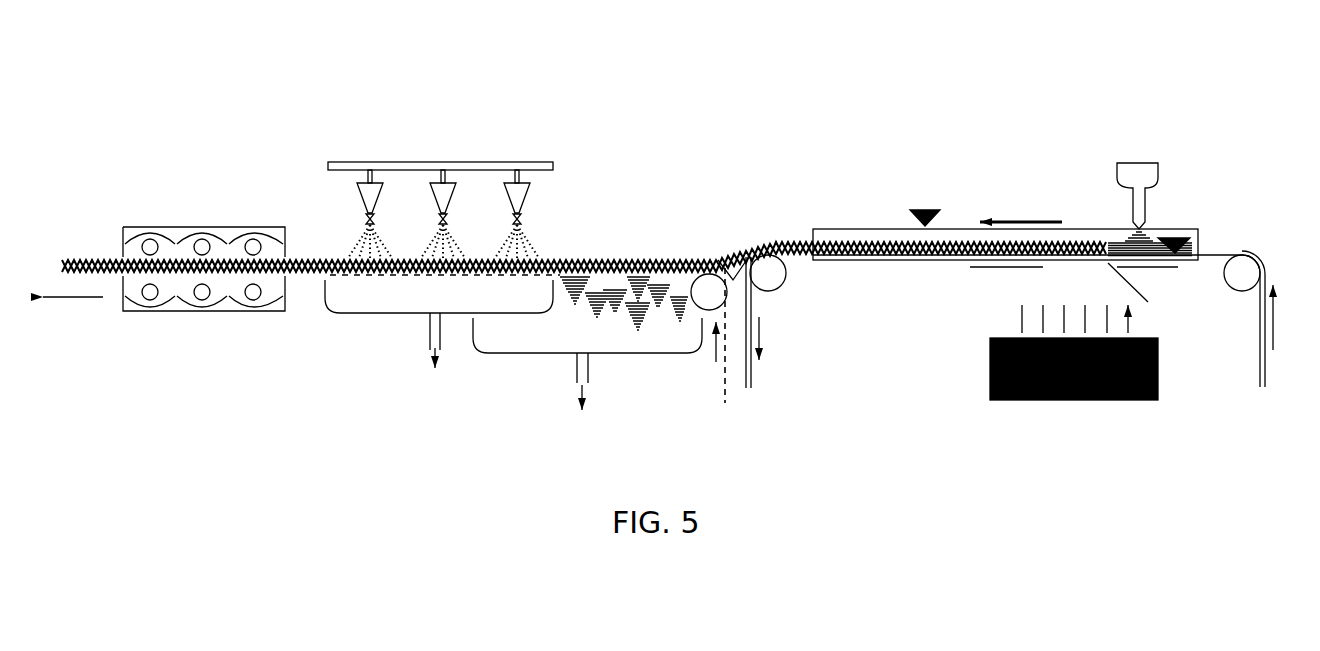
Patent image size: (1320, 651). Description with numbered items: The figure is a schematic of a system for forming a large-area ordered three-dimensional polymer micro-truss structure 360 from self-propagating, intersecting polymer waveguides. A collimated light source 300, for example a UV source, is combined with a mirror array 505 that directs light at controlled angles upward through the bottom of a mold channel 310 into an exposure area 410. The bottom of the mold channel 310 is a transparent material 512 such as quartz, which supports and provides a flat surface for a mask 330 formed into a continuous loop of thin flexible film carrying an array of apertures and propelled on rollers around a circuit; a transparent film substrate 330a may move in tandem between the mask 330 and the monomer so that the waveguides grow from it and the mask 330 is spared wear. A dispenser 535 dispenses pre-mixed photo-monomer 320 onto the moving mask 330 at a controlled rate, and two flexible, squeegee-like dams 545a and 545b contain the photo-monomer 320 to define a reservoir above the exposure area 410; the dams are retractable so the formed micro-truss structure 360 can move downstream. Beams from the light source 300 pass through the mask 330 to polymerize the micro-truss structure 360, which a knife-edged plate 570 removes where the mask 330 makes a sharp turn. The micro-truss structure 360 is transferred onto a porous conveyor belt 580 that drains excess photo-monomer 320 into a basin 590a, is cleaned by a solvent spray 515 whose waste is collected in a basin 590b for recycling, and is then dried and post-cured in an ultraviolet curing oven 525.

The collimated light source 300 is at (1005, 400).
The mold channel 310 is at (1172, 223).
The photo-monomer 320 is at (1118, 252).
The mask 330 is at (1250, 368).
The transparent film substrate 330a is at (1272, 370).
The micro-truss structure 360 is at (785, 237).
The exposure area 410 is at (1047, 268).
The mirror array 505 is at (1008, 278).
The transparent material 512 is at (893, 265).
The spray 515 is at (345, 240).
The ultraviolet curing oven 525 is at (160, 218).
The dispenser 535 is at (1133, 162).
The dam 545a is at (1190, 238).
The dam 545b is at (916, 208).
The knife-edged plate 570 is at (723, 257).
The porous conveyor belt 580 is at (717, 392).
The basin 590a is at (587, 357).
The basin 590b is at (439, 341).